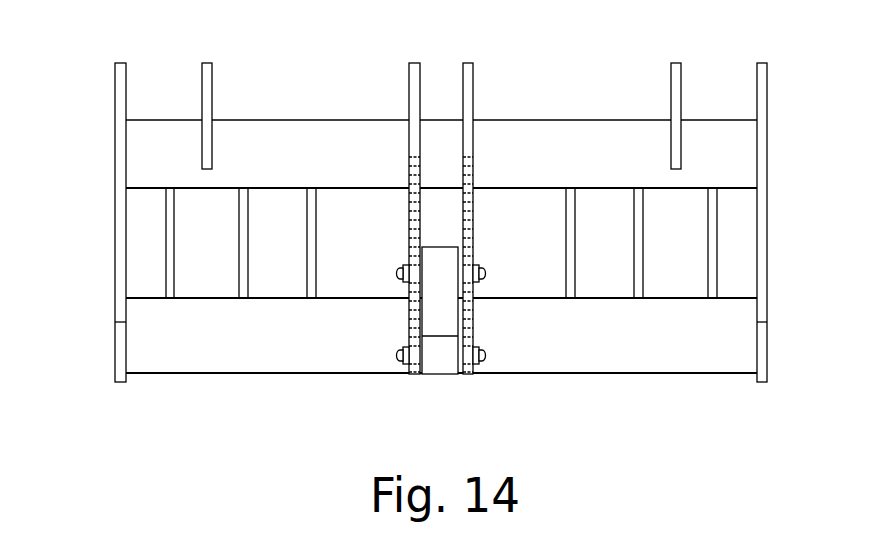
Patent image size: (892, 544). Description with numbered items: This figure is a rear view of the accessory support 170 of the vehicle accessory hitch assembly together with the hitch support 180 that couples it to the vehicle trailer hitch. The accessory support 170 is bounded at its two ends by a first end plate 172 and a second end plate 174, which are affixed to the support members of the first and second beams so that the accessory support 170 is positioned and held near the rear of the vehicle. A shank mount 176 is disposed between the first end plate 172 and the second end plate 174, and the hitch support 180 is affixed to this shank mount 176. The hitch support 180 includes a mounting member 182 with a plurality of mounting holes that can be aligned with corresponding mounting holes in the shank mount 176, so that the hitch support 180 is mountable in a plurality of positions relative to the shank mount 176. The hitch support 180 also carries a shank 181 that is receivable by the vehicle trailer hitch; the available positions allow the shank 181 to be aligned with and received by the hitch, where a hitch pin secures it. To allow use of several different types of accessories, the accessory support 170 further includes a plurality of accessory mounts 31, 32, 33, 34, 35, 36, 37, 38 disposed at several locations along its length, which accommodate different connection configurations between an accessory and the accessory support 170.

The accessory support 170 is at (330, 100).
The first end plate 172 is at (116, 99).
The second end plate 174 is at (767, 100).
The shank mount 176 is at (470, 140).
The accessory mount 34 is at (212, 94).
The accessory mount 32 is at (672, 92).
The accessory mount 31 is at (708, 254).
The accessory mount 33 is at (634, 254).
The accessory mount 35 is at (566, 254).
The accessory mount 36 is at (176, 260).
The accessory mount 37 is at (246, 260).
The accessory mount 38 is at (312, 260).
The hitch support 180 is at (453, 339).
The shank 181 is at (425, 365).
The mounting member 182 is at (442, 318).